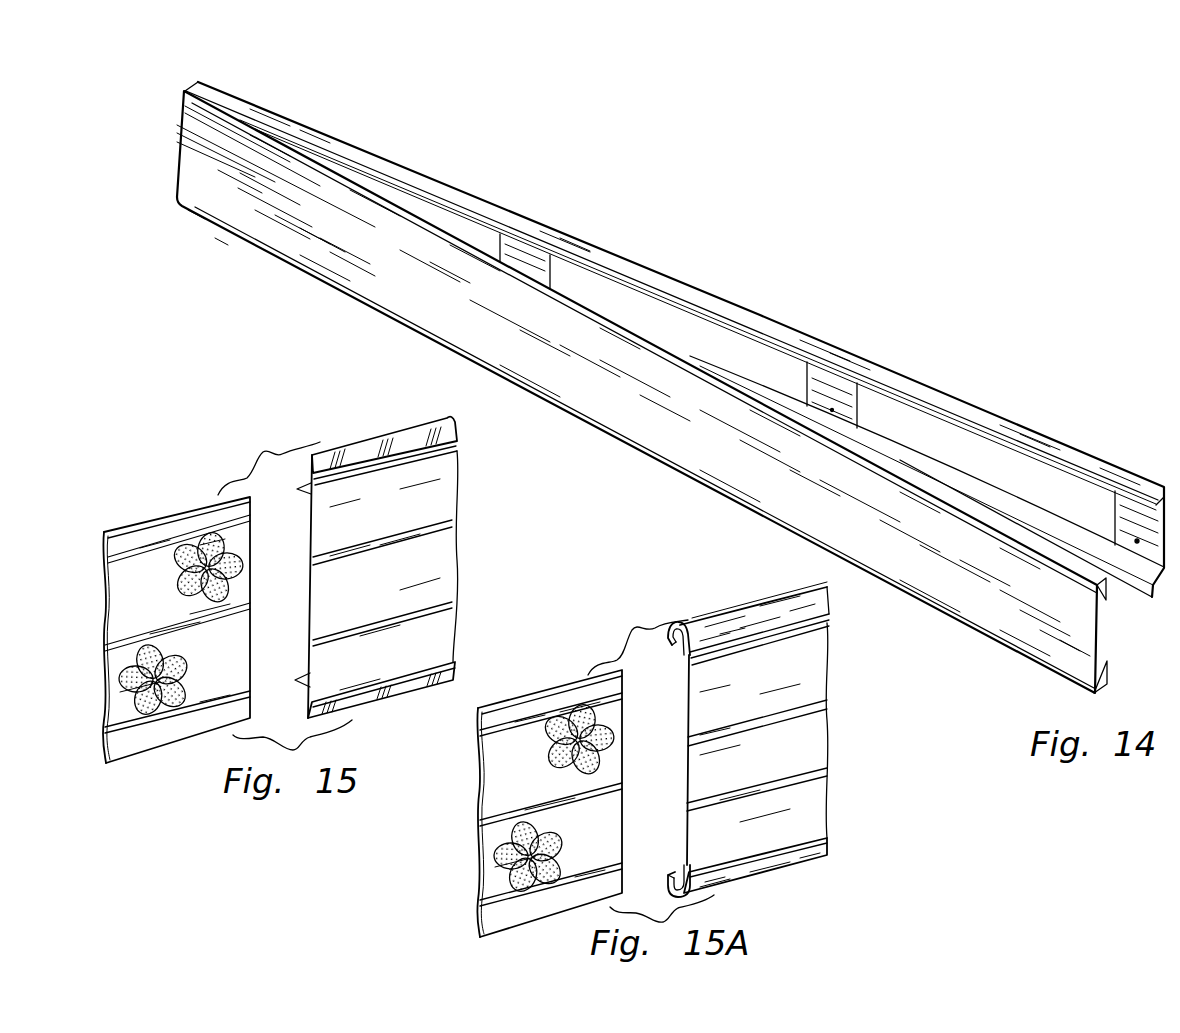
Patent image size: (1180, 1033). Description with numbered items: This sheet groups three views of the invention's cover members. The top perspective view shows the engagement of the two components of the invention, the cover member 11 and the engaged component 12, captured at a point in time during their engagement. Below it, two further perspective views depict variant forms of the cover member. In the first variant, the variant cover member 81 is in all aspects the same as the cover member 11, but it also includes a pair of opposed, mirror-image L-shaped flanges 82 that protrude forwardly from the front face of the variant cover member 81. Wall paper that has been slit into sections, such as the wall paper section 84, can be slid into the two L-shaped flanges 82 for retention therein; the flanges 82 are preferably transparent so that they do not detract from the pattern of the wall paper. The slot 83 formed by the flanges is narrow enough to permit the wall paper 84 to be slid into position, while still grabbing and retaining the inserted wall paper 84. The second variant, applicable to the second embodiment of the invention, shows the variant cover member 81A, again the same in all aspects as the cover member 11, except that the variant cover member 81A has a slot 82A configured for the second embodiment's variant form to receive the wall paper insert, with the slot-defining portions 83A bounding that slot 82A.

In FIG. 14, the cover member 11 is at (343, 294).
In FIG. 14, the second channel board 12 is at (623, 259).
In FIG. 15, the variant cover member 81 is at (392, 591).
In FIG. 15, the L-shaped flanges 82 is at (367, 468).
In FIG. 15, the slot 83 is at (312, 528).
In FIG. 15, the wall paper section 84 is at (159, 601).
In FIG. 15A, the wall paper section 84 is at (531, 776).
In FIG. 15A, the variant cover member (second variant) 81A is at (778, 766).
In FIG. 15A, the slot 82A is at (742, 644).
In FIG. 15A, the flange clip hook (alternate) 83A is at (694, 701).